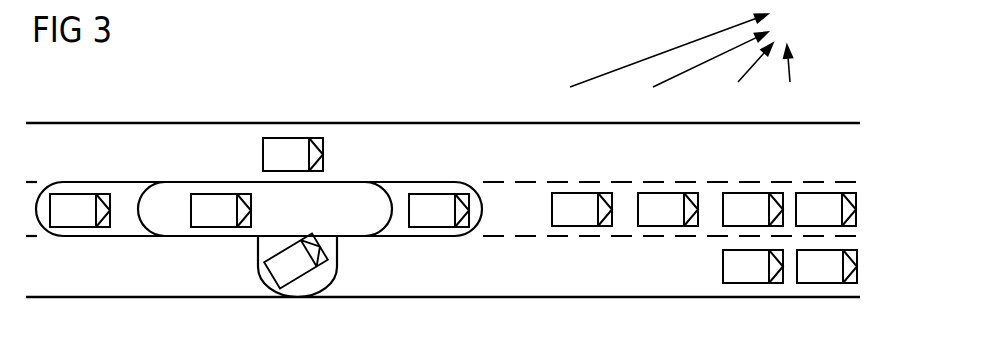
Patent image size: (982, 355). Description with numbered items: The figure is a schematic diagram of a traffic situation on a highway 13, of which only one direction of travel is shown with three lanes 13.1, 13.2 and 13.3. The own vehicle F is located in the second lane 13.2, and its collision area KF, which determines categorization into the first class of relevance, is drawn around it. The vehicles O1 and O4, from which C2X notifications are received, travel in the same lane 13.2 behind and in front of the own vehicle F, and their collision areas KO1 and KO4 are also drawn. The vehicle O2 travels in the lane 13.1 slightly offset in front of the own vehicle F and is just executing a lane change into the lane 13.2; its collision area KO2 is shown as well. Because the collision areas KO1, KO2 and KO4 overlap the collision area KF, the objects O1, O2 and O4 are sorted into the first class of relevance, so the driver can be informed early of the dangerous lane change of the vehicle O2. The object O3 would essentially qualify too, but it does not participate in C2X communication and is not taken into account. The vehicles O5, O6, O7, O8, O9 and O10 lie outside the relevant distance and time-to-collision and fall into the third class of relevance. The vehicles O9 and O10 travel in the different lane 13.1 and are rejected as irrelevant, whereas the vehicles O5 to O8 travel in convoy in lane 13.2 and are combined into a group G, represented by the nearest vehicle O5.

The highway 13 is at (443, 214).
The lane 13.1 is at (605, 290).
The second lane 13.2 is at (513, 228).
The lane 13.3 is at (500, 132).
The vehicle O1 is at (80, 181).
The vehicle O2 is at (273, 261).
The object O3 is at (292, 125).
The vehicle O4 is at (439, 183).
The vehicle O5 is at (573, 156).
The vehicle O6 is at (660, 156).
The vehicle O7 is at (745, 156).
The vehicle O8 is at (818, 156).
The vehicle O9 is at (753, 297).
The vehicle O10 is at (827, 297).
The own vehicle F is at (213, 195).
The collision area KF is at (352, 188).
The collision area KO1 is at (133, 193).
The collision area KO2 is at (298, 292).
The collision area KO4 is at (397, 232).
The group G is at (682, 50).